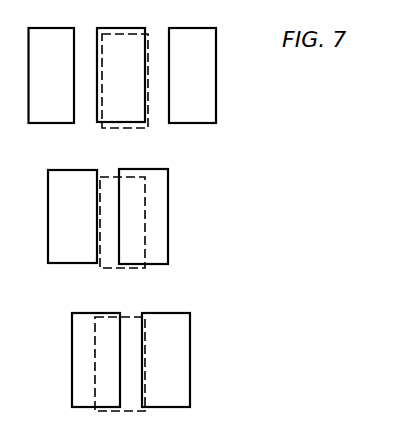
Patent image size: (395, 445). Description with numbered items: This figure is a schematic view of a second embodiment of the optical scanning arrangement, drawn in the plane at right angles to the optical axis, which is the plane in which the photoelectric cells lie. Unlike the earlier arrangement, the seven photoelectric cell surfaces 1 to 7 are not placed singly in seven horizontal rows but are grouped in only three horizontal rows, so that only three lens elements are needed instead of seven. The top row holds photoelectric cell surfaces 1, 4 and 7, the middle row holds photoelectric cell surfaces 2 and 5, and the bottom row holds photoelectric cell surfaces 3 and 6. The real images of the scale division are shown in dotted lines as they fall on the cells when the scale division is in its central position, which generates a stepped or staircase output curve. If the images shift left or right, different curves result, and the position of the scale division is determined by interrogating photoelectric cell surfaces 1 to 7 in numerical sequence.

The photoelectric cell surface 1 is at (52, 75).
The photoelectric cell surface 2 is at (72, 216).
The photoelectric cell surface 3 is at (108, 362).
The photoelectric cell surface 4 is at (122, 78).
The photoelectric cell surface 5 is at (134, 218).
The photoelectric cell surface 6 is at (166, 360).
The photoelectric cell surface 7 is at (192, 75).